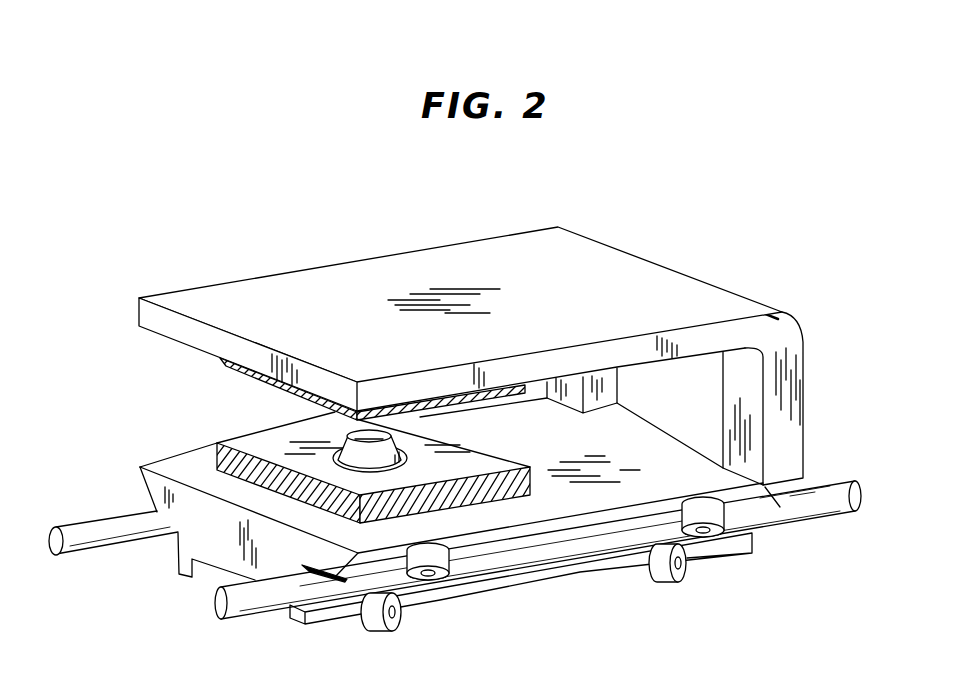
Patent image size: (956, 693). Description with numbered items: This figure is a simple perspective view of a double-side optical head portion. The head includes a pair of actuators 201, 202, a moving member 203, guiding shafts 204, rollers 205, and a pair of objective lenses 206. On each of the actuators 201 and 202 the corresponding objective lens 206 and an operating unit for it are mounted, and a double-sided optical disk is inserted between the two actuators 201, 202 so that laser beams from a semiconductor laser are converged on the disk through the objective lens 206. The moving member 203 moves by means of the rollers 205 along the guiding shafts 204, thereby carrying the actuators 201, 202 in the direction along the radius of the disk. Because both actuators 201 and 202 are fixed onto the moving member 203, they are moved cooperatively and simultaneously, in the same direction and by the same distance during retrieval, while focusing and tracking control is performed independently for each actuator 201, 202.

The actuator 201 is at (220, 359).
The actuator 202 is at (217, 448).
The moving member 203 is at (606, 491).
The guiding shafts 204 is at (212, 605).
The rollers 205 is at (430, 580).
The objective lens 206 is at (342, 436).